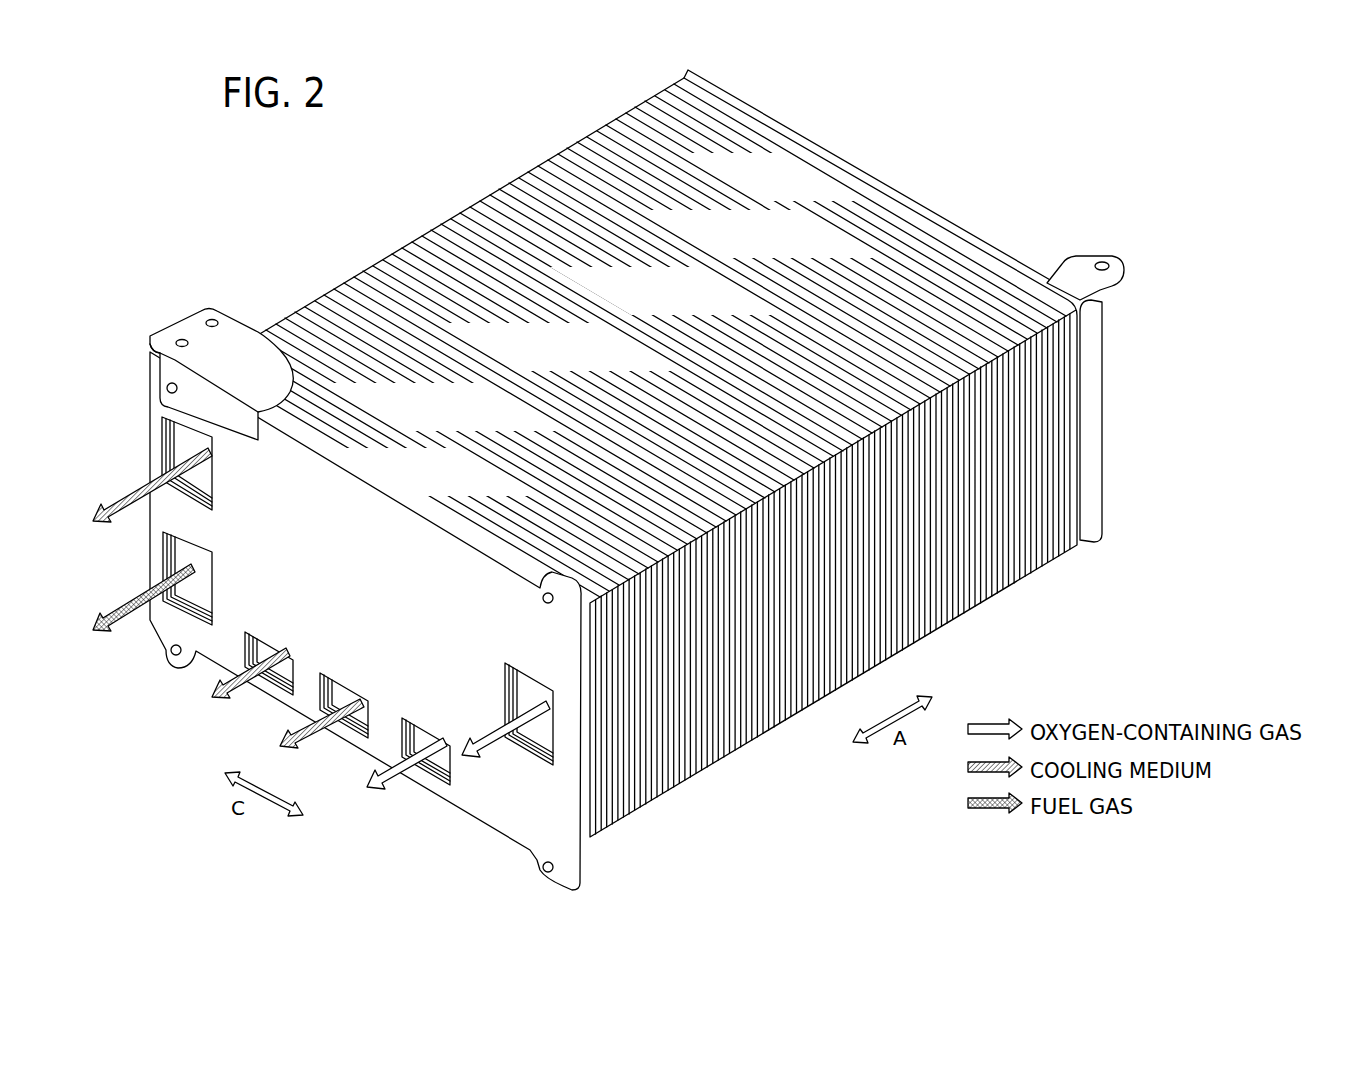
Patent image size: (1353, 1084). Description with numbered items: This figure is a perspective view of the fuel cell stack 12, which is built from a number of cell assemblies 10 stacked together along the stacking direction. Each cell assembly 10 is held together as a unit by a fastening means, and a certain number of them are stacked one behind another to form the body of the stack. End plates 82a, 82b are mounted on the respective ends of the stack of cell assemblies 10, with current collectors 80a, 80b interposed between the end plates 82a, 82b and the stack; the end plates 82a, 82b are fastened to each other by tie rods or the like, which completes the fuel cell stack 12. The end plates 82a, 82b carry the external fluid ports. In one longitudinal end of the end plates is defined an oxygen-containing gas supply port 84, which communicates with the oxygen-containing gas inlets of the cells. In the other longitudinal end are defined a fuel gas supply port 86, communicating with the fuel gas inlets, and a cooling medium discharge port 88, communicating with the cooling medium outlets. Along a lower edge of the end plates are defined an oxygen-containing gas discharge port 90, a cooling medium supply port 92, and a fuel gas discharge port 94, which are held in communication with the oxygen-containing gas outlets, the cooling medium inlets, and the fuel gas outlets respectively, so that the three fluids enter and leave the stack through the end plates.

The fuel cell stack 12 is at (128, 205).
The cell assembly 10 is at (433, 214).
The current collector 80a is at (178, 330).
The current collector 80b is at (1082, 283).
The end plate 82a is at (527, 832).
The end plate 82b is at (910, 175).
The oxygen-containing gas supply port 84 is at (522, 690).
The fuel gas supply port 86 is at (190, 558).
The cooling medium discharge port 88 is at (190, 444).
The oxygen-containing gas discharge port 90 is at (428, 770).
The cooling medium supply port 92 is at (353, 726).
The fuel gas discharge port 94 is at (278, 683).